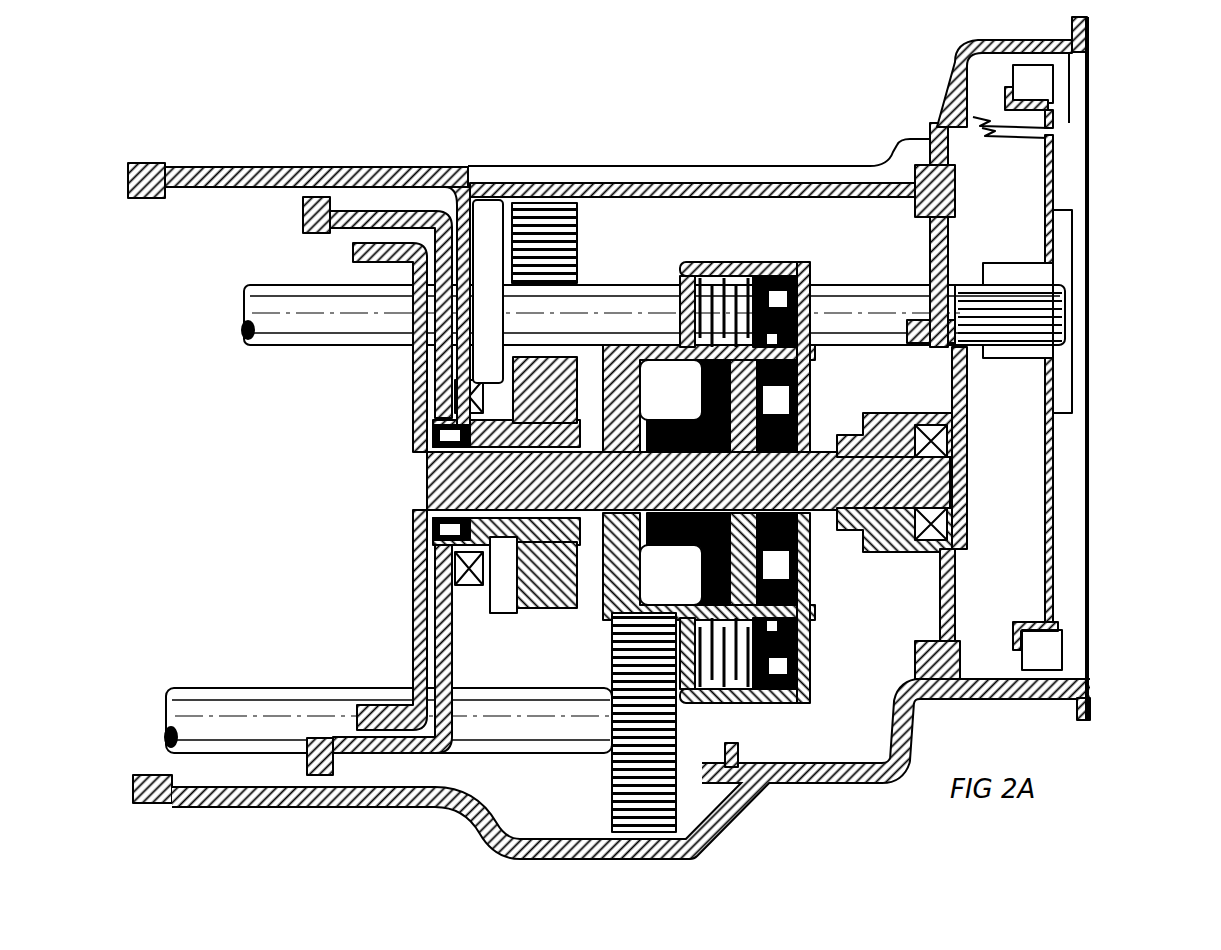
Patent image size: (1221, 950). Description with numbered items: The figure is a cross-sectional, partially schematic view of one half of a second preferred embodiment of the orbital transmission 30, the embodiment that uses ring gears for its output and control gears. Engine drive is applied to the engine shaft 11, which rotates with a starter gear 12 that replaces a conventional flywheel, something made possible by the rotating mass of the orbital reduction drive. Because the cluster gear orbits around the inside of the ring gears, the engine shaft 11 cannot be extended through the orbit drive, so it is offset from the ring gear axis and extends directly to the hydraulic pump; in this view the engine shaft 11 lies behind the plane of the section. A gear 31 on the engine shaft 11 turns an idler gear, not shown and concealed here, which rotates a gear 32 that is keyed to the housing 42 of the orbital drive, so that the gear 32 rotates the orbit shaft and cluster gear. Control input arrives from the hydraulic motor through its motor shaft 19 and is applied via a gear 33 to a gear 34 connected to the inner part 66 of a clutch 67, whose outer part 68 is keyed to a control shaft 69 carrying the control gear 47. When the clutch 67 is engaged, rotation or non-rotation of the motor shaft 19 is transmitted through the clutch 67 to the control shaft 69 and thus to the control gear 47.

The engine shaft 11 is at (285, 347).
The starter gear 12 is at (1057, 463).
The motor shaft 19 is at (237, 687).
The orbital transmission 30 is at (448, 143).
The gear 31 is at (580, 248).
The gear 32 is at (537, 607).
The gear 33 is at (613, 772).
The gear 34 is at (612, 607).
The housing 42 is at (368, 222).
The control gear 47 is at (350, 248).
The inner part 66 is at (724, 603).
The clutch 67 is at (722, 252).
The outer part 68 is at (808, 378).
The control shaft 69 is at (840, 555).